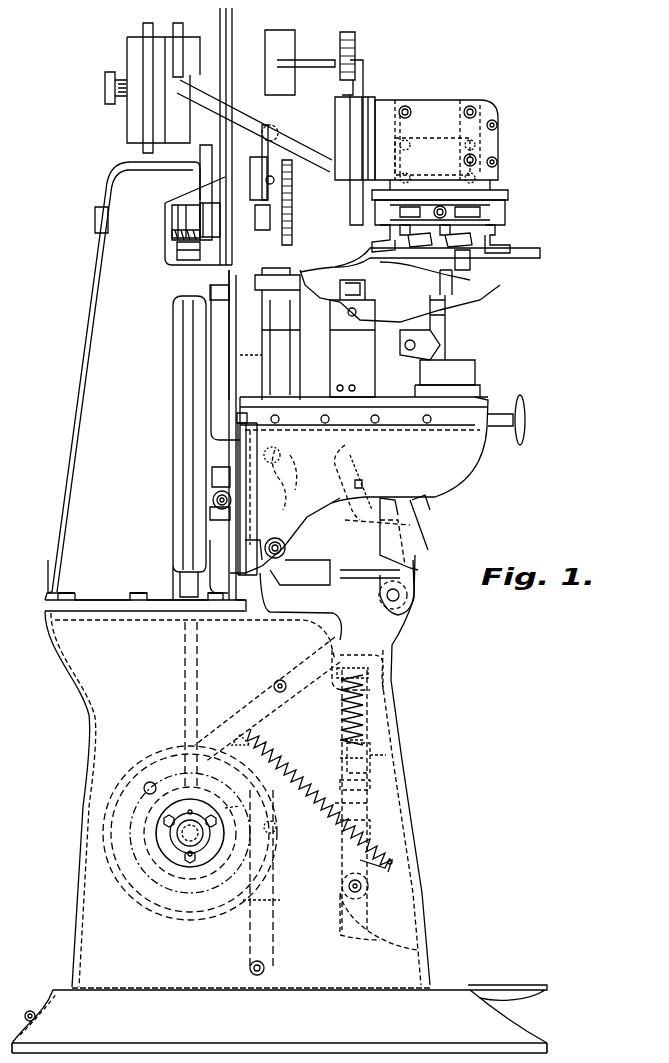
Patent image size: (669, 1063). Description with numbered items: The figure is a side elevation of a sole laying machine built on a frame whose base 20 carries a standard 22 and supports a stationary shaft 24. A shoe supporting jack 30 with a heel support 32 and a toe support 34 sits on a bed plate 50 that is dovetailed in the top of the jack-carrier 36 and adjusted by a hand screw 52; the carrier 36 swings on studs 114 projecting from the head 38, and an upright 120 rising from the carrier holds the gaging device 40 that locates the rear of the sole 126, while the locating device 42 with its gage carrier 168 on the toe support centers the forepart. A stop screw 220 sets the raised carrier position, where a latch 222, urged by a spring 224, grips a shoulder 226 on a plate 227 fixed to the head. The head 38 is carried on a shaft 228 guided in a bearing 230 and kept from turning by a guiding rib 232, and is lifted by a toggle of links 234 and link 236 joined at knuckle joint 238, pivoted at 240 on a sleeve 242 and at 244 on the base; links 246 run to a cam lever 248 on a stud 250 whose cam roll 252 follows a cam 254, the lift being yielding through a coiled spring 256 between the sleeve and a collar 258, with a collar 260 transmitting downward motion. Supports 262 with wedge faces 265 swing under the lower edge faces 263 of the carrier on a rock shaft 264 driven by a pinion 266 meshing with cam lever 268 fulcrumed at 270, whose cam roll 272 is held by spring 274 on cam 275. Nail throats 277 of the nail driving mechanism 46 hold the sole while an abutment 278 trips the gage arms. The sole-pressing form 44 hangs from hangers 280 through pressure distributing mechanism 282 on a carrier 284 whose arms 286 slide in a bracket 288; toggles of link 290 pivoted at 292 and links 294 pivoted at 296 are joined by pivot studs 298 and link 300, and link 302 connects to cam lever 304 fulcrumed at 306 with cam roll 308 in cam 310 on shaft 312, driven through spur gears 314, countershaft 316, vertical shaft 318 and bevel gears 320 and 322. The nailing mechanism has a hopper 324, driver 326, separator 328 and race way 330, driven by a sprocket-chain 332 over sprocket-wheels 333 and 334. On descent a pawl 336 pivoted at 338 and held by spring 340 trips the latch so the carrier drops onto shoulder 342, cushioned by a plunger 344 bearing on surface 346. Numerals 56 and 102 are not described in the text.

The base 20 is at (75, 940).
The standard 22 is at (72, 418).
The stationary shaft 24 is at (190, 835).
The shoe supporting jack 30 is at (398, 364).
The heel support 32 is at (340, 362).
The toe support 34 is at (455, 366).
The jack-carrier 36 is at (458, 457).
The head 38 is at (278, 556).
The gaging device 40 is at (285, 290).
The locating device 42 is at (475, 280).
The sole-pressing form 44 is at (542, 254).
The nail driving mechanism 46 is at (254, 126).
The bed plate 50 is at (392, 405).
The hand screw 52 is at (527, 420).
The slide guide 56 is at (350, 345).
The plate 102 is at (440, 393).
The studs 114 is at (290, 575).
The upright 120 is at (240, 357).
The sole 126 is at (515, 270).
The gage carrier 168 is at (468, 338).
The stop screw 220 is at (255, 415).
The latch 222 is at (236, 455).
The spring 224 is at (237, 433).
The shoulder 226 is at (213, 495).
The plate 227 is at (265, 545).
The shaft 228 is at (382, 572).
The bearing 230 is at (373, 633).
The guiding rib 232 is at (245, 612).
The links 234 is at (370, 790).
The link 236 is at (395, 867).
The knuckle joint 238 is at (395, 828).
The pivot 240 is at (370, 745).
The sleeve 242 is at (375, 755).
The pivot 244 is at (362, 888).
The links 246 is at (272, 830).
The cam lever 248 is at (262, 920).
The stud 250 is at (250, 968).
The cam roll 252 is at (300, 775).
The cam 254 is at (227, 918).
The coiled spring 256 is at (370, 695).
The collar 258 is at (395, 672).
The collar 260 is at (375, 770).
The supports 262 is at (415, 540).
The lower edge faces 263 is at (395, 495).
The rock shaft 264 is at (405, 600).
The wedge face 265 is at (423, 518).
The pinion 266 is at (408, 618).
The cam lever 268 is at (312, 670).
The fulcrum 270 is at (278, 682).
The cam roll 272 is at (150, 782).
The spring 274 is at (400, 805).
The cam 275 is at (125, 828).
The nail throats 277 is at (370, 270).
The abutment 278 is at (325, 275).
The hangers 280 is at (505, 228).
The pressure distributing mechanism 282 is at (475, 207).
The carrier 284 is at (510, 195).
The arms 286 is at (500, 145).
The bracket 288 is at (488, 107).
The link 290 is at (430, 120).
The pivot 292 is at (407, 108).
The links 294 is at (500, 160).
The pivot 296 is at (470, 188).
The pivot studs 298 is at (465, 146).
The link 300 is at (435, 140).
The link 302 is at (352, 137).
The cam lever 304 is at (270, 213).
The fulcrum 306 is at (200, 252).
The cam roll 308 is at (225, 177).
The cam 310 is at (250, 165).
The shaft 312 is at (270, 125).
The spur gears 314 is at (292, 185).
The countershaft 316 is at (178, 218).
The vertical shaft 318 is at (186, 328).
The bevel gears 320 is at (177, 233).
The bevel gears 322 is at (125, 812).
The hopper 324 is at (160, 68).
The driver 326 is at (355, 72).
The separator 328 is at (330, 30).
The race way 330 is at (195, 97).
The sprocket-chain 332 is at (235, 55).
The sprocket-wheel 333 is at (229, 280).
The sprocket-wheel 334 is at (222, 40).
The pawl 336 is at (212, 470).
The pivot 338 is at (210, 510).
The spring 340 is at (237, 527).
The shoulder 342 is at (295, 475).
The plunger 344 is at (355, 462).
The surface 346 is at (380, 432).